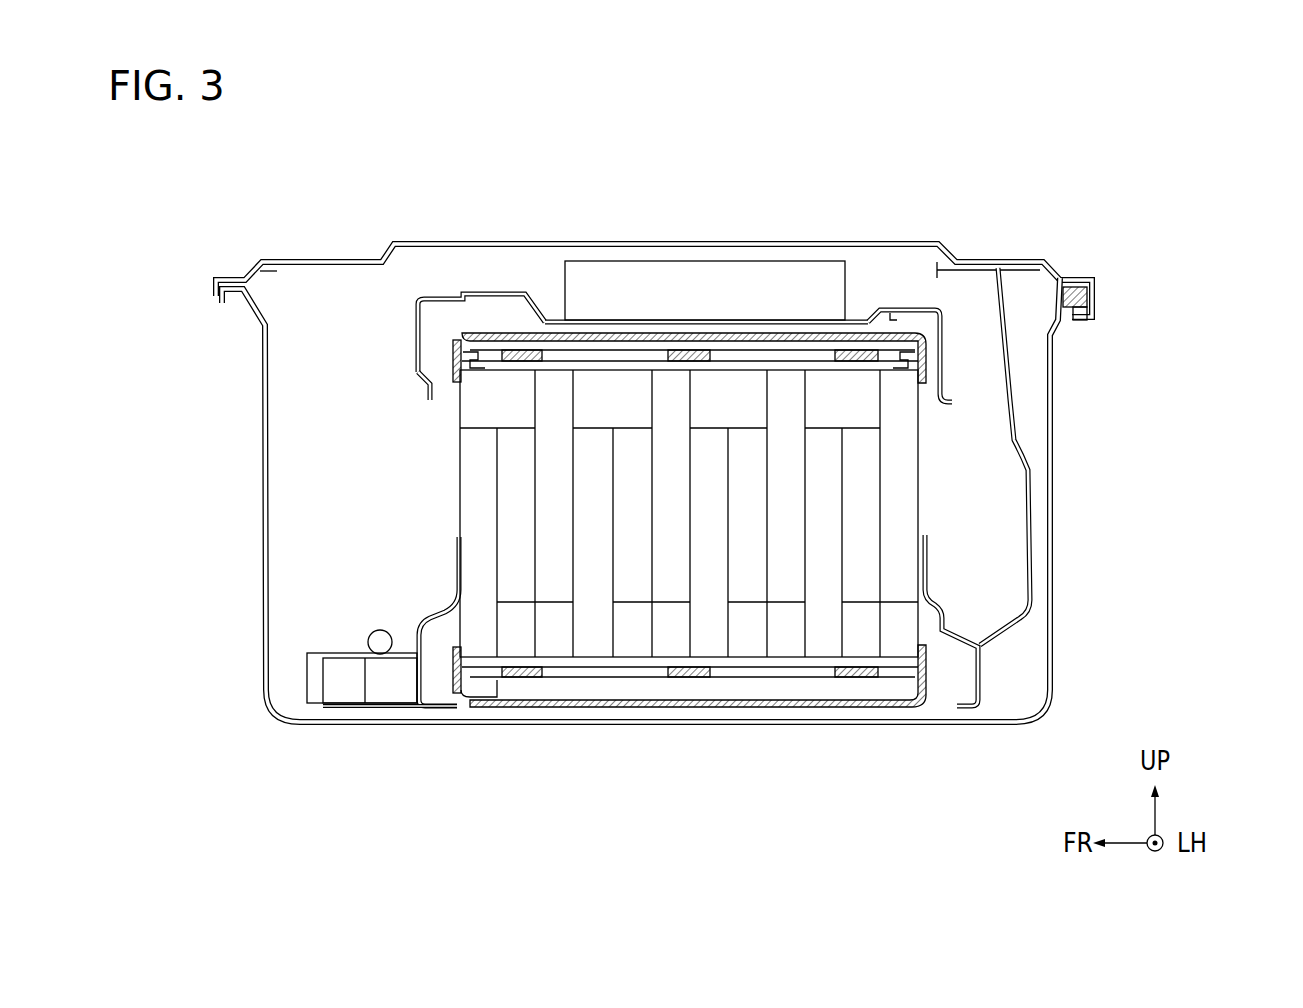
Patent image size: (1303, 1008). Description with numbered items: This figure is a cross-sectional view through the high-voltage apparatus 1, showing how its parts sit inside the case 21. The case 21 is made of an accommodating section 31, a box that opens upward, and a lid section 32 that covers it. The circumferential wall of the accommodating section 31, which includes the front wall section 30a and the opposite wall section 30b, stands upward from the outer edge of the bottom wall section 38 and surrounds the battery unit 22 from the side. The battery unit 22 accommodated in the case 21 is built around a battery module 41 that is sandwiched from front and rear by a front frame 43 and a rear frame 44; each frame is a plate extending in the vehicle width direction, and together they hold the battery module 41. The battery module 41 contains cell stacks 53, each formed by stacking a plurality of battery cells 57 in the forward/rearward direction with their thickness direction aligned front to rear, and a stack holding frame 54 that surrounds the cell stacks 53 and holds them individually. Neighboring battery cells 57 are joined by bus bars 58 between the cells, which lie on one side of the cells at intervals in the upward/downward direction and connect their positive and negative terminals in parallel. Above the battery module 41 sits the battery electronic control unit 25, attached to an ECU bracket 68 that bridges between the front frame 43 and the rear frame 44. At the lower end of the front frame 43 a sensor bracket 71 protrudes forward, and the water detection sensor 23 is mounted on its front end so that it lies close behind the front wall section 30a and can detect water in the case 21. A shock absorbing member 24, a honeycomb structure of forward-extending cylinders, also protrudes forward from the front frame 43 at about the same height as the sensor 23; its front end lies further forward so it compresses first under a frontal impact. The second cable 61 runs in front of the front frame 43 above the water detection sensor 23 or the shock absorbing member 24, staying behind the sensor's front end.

The high-voltage apparatus 1 is at (1046, 168).
The case 21 is at (1184, 230).
The battery unit 22 is at (416, 391).
The water detection sensor 23 is at (342, 694).
The shock absorbing member 24 is at (307, 680).
The battery electronic control unit 25 is at (712, 292).
The front wall section 30a is at (266, 530).
The rear wall 30b is at (1055, 488).
The accommodating section 31 is at (1069, 378).
The lid section 32 is at (1051, 250).
The bottom wall section 38 is at (898, 726).
The battery module 41 is at (719, 669).
The front frame 43 is at (413, 343).
The rear frame 44 is at (1032, 576).
The cell stack 53 is at (689, 513).
The stack holding frame 54 is at (537, 345).
The battery cell 57 is at (496, 645).
The bus bars between the cells 58 is at (493, 387).
The second cable 61 is at (368, 634).
The ECU bracket 68 is at (853, 313).
The sensor bracket 71 is at (394, 708).